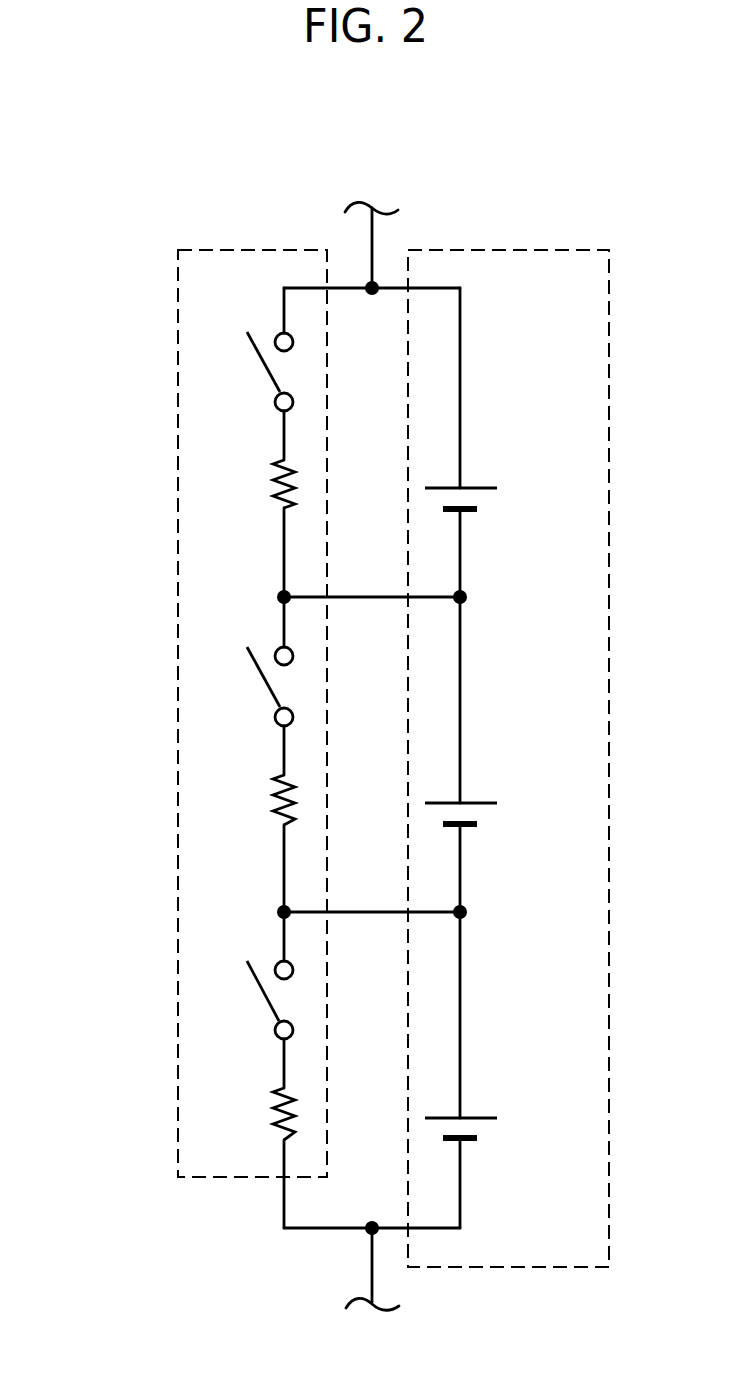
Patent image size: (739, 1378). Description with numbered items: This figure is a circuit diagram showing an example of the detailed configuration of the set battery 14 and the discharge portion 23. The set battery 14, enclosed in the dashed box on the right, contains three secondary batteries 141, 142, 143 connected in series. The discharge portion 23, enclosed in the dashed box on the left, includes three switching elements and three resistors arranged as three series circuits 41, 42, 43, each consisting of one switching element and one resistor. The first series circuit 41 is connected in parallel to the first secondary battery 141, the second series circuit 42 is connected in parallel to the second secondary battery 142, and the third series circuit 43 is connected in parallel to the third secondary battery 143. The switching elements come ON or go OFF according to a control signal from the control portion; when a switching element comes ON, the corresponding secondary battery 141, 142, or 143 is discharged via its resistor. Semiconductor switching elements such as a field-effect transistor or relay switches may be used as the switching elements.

The set battery 14 is at (609, 338).
The secondary battery 141 is at (485, 503).
The secondary battery 142 is at (485, 817).
The secondary battery 143 is at (485, 1131).
The discharge portion 23 is at (178, 292).
The discharge unit (switch SW1 and resistor R1) 41 is at (152, 407).
The discharge unit (switch SW2 and resistor R2) 42 is at (154, 726).
The discharge unit (switch SW3 and resistor R3) 43 is at (154, 1026).